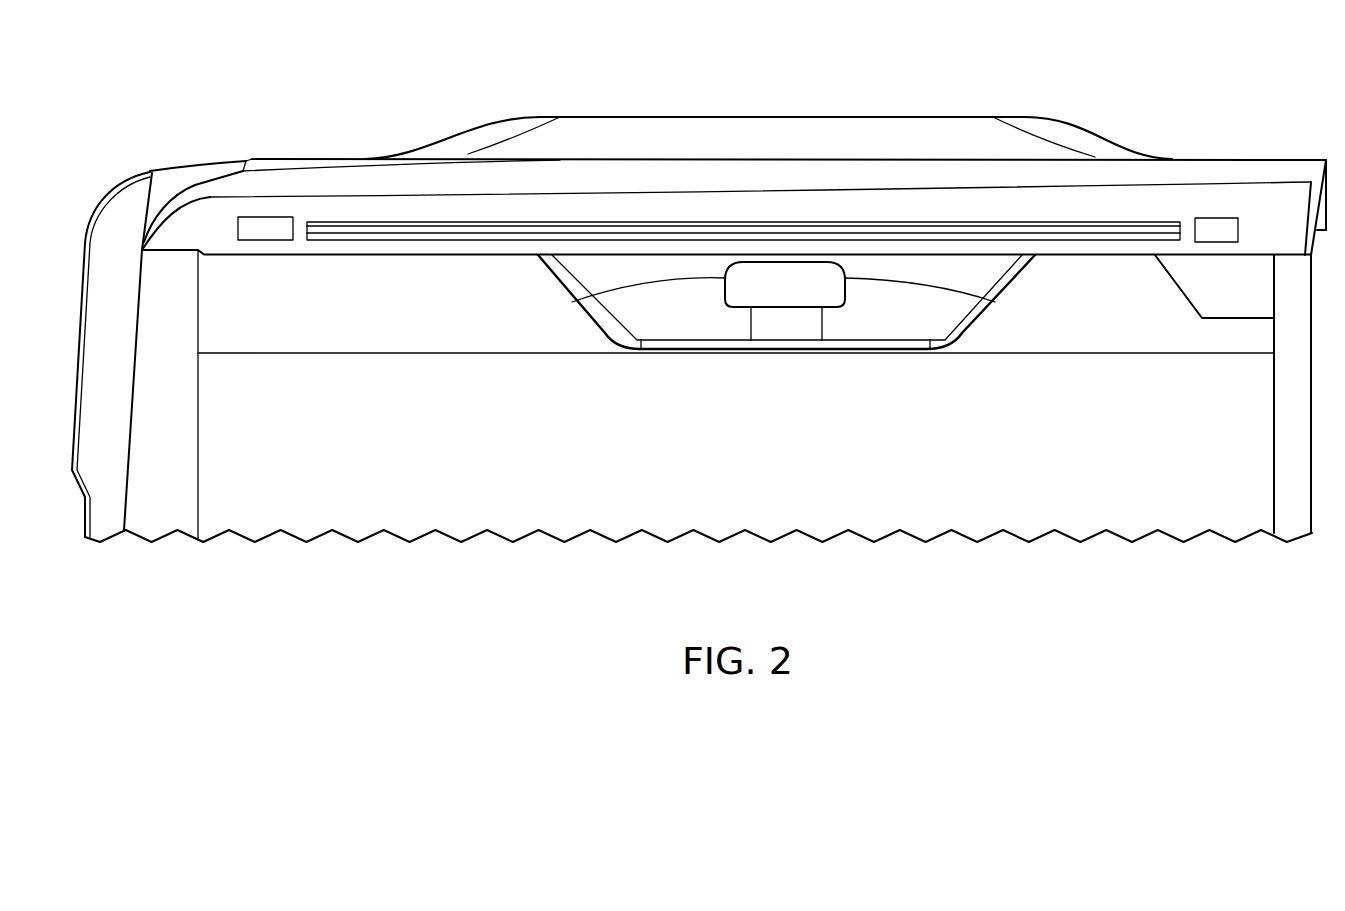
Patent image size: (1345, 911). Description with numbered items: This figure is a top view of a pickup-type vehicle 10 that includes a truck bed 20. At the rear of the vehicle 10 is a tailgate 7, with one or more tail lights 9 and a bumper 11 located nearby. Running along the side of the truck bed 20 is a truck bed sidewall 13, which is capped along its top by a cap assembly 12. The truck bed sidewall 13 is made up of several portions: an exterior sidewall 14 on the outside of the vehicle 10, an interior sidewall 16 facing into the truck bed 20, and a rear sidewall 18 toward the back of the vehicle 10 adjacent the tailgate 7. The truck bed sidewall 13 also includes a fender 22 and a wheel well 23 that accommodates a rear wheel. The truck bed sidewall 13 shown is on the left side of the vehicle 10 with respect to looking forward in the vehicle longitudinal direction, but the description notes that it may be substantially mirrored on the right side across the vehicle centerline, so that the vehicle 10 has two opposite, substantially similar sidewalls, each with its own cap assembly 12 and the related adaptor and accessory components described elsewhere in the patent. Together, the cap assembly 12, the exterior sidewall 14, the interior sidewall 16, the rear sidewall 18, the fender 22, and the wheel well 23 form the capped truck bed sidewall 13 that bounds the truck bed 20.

The tailgate 7 is at (142, 423).
The tail light 9 is at (220, 160).
The vehicle 10 is at (133, 132).
The bumper 11 is at (121, 203).
The cap assembly 12 is at (1192, 183).
The truck bed sidewall 13 is at (1053, 113).
The exterior sidewall 14 is at (343, 160).
The interior sidewall 16 is at (388, 258).
The rear sidewall 18 is at (185, 199).
The truck bed 20 is at (752, 460).
The fender 22 is at (505, 128).
The wheel well 23 is at (967, 312).